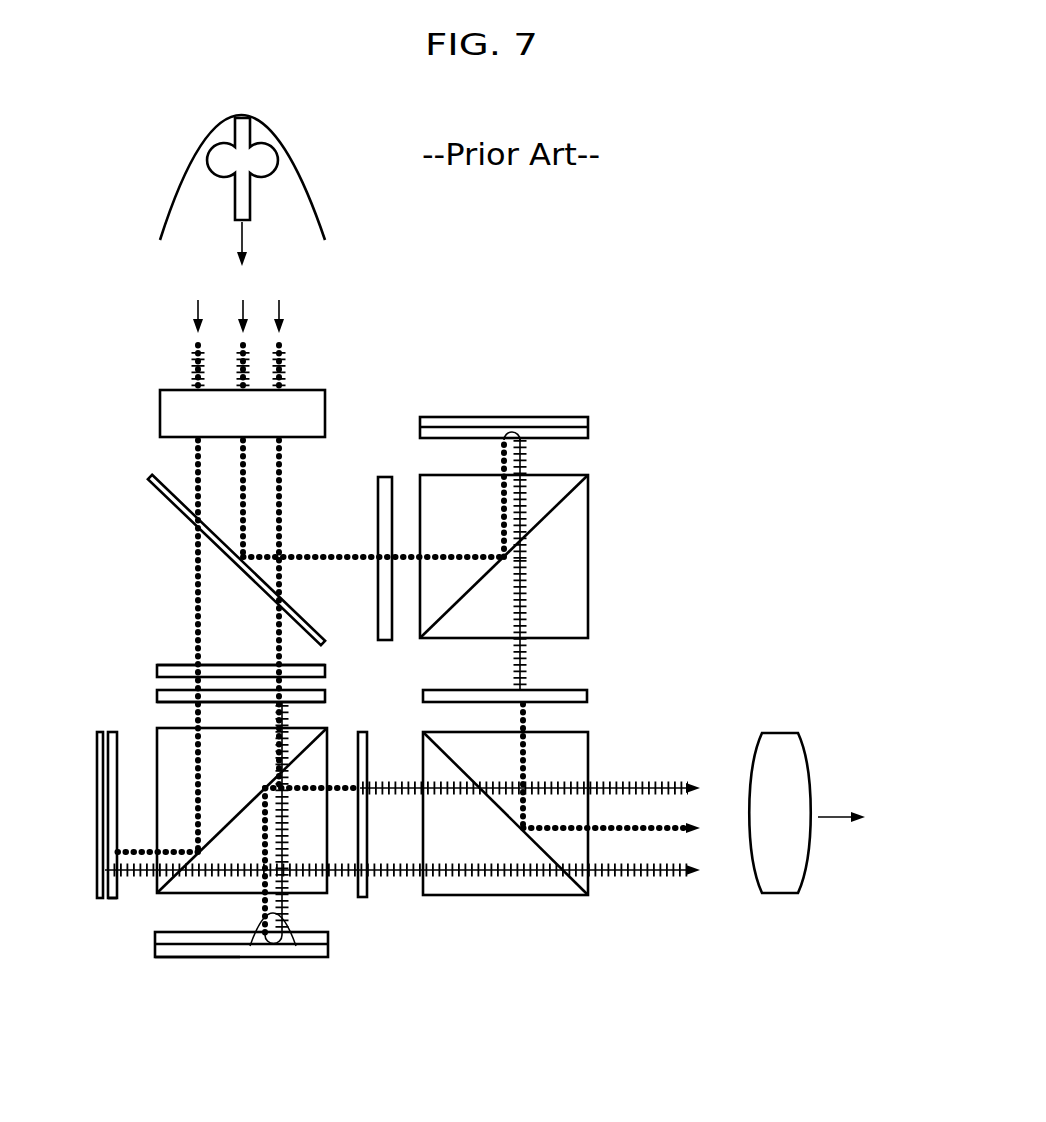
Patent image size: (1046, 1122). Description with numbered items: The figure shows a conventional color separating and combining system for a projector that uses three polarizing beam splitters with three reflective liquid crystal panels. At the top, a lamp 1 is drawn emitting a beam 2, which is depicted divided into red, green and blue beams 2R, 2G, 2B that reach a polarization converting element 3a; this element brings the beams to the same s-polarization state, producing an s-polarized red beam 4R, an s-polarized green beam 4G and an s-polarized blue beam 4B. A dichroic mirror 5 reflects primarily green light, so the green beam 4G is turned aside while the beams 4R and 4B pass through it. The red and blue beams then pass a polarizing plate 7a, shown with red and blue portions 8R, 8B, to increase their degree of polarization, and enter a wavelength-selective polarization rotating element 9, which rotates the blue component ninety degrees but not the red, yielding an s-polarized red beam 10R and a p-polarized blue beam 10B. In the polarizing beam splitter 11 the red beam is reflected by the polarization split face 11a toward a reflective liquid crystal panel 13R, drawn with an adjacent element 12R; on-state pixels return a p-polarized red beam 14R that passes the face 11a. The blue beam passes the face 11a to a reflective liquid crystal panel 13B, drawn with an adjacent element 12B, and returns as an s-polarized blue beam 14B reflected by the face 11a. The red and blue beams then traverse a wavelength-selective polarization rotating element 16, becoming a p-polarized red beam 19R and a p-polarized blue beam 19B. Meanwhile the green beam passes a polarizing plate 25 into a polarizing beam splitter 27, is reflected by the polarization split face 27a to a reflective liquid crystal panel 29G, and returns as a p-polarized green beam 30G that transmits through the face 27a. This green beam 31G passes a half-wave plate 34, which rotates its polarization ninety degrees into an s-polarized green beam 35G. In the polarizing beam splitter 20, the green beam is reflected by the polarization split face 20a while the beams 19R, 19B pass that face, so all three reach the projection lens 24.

The light source lamp 1 is at (258, 160).
The white light 2 is at (248, 237).
The red light 2R is at (197, 315).
The green light 2G is at (243, 315).
The blue light 2B is at (279, 300).
The polarization converting element 3a is at (165, 390).
The s-polarized red beam 4R is at (198, 447).
The s-polarized green beam 4G is at (243, 468).
The s-polarized blue beam 4B is at (279, 470).
The dichroic mirror 5 is at (152, 482).
The polarizing plate 7a is at (165, 666).
The red light retardation region 8R is at (165, 672).
The blue light retardation region 8B is at (325, 671).
The wavelength-selective polarization rotating element 9 is at (162, 693).
The s-polarized red beam 10R is at (198, 718).
The p-polarized blue beam 10B is at (325, 697).
The polarizing beam splitter 11 is at (157, 752).
The polarization split face 11a is at (160, 893).
The red reflective liquid crystal panel 12R is at (110, 845).
The reflective liquid crystal panel 13R is at (97, 840).
The p-polarized red beam 14R is at (120, 880).
The blue reflective liquid crystal panel 12B is at (313, 957).
The reflective liquid crystal panel 13B is at (175, 957).
The s-polarized blue beam 14B is at (247, 957).
The wavelength-selective polarization rotating element 16 is at (363, 897).
The p-polarized blue beam 19B is at (400, 785).
The p-polarized red beam 19R is at (405, 877).
The polarizing beam splitter 20 is at (500, 895).
The polarization split face 20a is at (588, 895).
The projection lens 24 is at (780, 893).
The polarizing plate 25 is at (385, 477).
The polarizing beam splitter 27 is at (590, 530).
The polarization split face 27a is at (588, 478).
The reflective liquid crystal panel 29G is at (504, 417).
The p-polarized green beam 30G is at (528, 452).
The green beam 31G is at (528, 602).
The half-wave plate 34 is at (587, 692).
The s-polarized green beam 35G is at (528, 714).